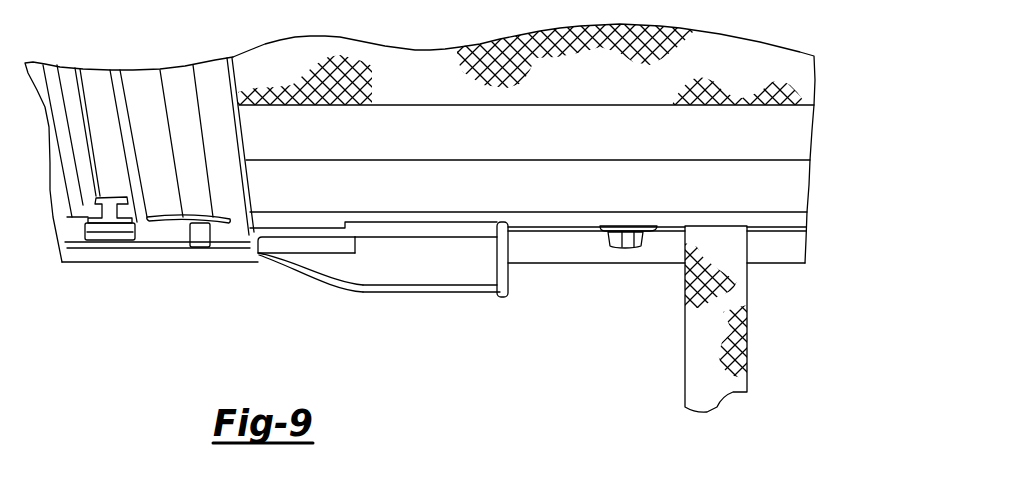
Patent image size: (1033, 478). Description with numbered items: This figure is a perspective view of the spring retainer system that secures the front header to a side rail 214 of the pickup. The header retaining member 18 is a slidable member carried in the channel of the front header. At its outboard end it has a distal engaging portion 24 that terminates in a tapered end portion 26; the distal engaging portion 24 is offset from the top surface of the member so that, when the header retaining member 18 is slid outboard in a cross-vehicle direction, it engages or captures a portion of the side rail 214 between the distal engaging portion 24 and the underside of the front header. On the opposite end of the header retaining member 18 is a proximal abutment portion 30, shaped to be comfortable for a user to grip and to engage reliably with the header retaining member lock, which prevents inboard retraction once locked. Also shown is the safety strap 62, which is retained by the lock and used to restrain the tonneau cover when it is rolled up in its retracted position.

The header retaining member 18 is at (420, 285).
The distal engaging portion 24 is at (285, 248).
The tapered end portion 26 is at (257, 236).
The proximal abutment portion 30 is at (509, 290).
The safety strap 62 is at (685, 350).
The side rail 214 is at (140, 225).